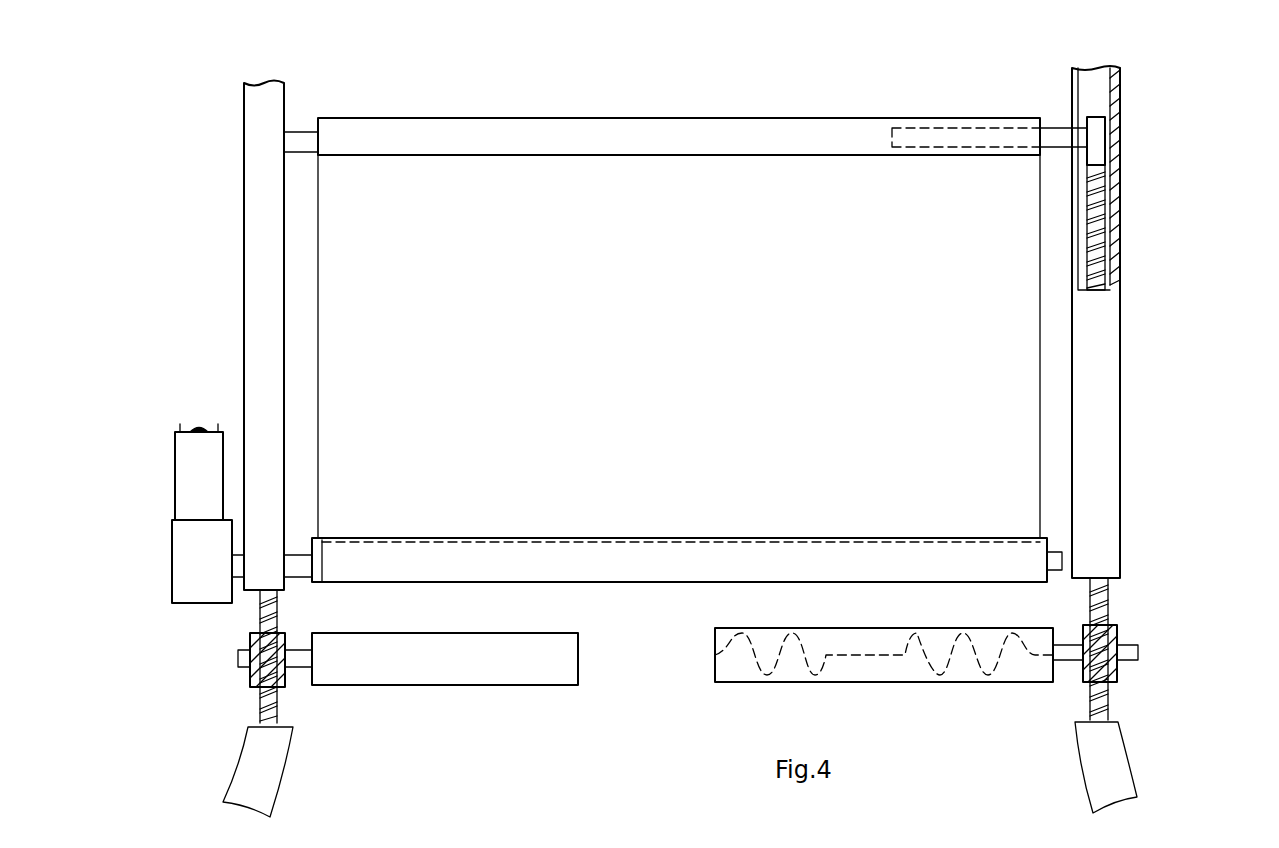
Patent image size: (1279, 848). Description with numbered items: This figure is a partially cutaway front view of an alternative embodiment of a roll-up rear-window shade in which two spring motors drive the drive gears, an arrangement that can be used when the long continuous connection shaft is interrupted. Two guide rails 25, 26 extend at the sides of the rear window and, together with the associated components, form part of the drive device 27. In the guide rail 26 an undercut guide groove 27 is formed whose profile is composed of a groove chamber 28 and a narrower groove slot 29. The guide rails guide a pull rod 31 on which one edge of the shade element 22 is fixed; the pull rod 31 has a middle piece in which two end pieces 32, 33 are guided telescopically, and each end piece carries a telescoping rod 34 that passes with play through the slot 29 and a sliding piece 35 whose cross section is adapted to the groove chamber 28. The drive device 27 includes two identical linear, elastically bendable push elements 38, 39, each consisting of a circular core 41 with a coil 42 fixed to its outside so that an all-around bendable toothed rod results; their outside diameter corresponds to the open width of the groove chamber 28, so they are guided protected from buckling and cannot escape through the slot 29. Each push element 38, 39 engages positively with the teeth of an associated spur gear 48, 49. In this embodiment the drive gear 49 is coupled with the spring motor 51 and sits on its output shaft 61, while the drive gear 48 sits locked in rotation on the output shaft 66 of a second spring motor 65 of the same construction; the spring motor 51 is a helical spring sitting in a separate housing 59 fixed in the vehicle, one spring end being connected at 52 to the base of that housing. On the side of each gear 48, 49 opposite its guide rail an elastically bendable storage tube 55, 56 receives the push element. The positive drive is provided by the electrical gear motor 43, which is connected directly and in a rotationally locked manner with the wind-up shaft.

The shade element 22 is at (727, 397).
The guide rail 25 is at (228, 341).
The guide rail 26 is at (1122, 415).
The drive device 27 is at (1058, 238).
The groove chamber 28 is at (1098, 103).
The groove slot 29 is at (1082, 92).
The pull rod 31 is at (700, 158).
The end piece 32 is at (301, 114).
The end piece 33 is at (1036, 103).
The telescoping rod 34 is at (1045, 152).
The sliding piece 35 is at (1102, 147).
The push element 38 is at (290, 716).
The push element 39 is at (1118, 248).
The core 41 is at (1086, 268).
The coil 42 is at (1112, 280).
The gear motor 43 is at (175, 470).
The spur gear 48 is at (260, 658).
The spur gear 49 is at (1110, 640).
The spring motor 51 is at (755, 658).
The connection point of helical spring end 52 is at (718, 664).
The storage tube 55 is at (280, 762).
The storage tube 56 is at (1115, 760).
The housing 59 is at (718, 650).
The output shaft 61 is at (1055, 670).
The spring motor 65 is at (530, 688).
The output shaft 66 is at (250, 660).